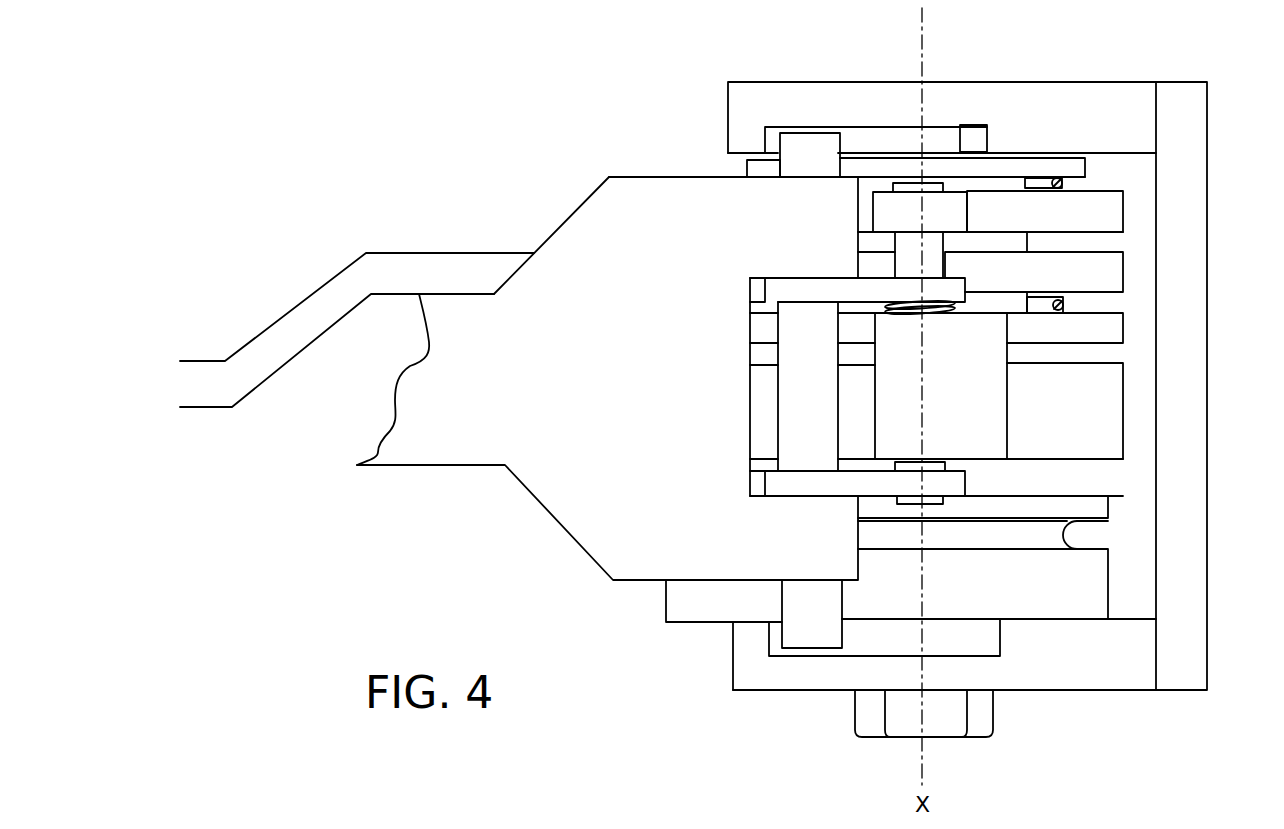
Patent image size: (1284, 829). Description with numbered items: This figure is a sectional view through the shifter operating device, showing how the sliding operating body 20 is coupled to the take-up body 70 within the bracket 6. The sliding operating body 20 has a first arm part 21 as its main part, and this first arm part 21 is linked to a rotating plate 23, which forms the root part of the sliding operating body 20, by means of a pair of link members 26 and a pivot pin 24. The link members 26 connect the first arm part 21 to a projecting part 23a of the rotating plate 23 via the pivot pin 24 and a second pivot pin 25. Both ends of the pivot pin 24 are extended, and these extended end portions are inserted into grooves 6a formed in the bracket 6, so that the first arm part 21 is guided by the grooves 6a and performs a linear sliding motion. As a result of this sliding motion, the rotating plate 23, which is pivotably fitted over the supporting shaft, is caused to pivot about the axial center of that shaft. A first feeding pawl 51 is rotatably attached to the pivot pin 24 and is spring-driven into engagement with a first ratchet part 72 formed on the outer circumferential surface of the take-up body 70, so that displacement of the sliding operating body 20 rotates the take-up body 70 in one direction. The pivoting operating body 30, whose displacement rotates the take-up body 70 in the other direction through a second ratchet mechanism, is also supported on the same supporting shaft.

The bracket 6 is at (1083, 100).
The grooves 6a is at (963, 133).
The sliding operating body 20 is at (462, 491).
The first arm part 21 is at (591, 514).
The rotating plate 23 is at (1113, 207).
The projecting part 23a is at (953, 208).
The pivot pin 24 is at (823, 147).
The pivot pin 25 is at (931, 183).
The link members 26 is at (798, 288).
The pivoting operating body 30 is at (282, 284).
The first feeding pawl 51 is at (995, 420).
The take-up body 70 is at (1135, 531).
The first ratchet part 72 is at (1103, 440).